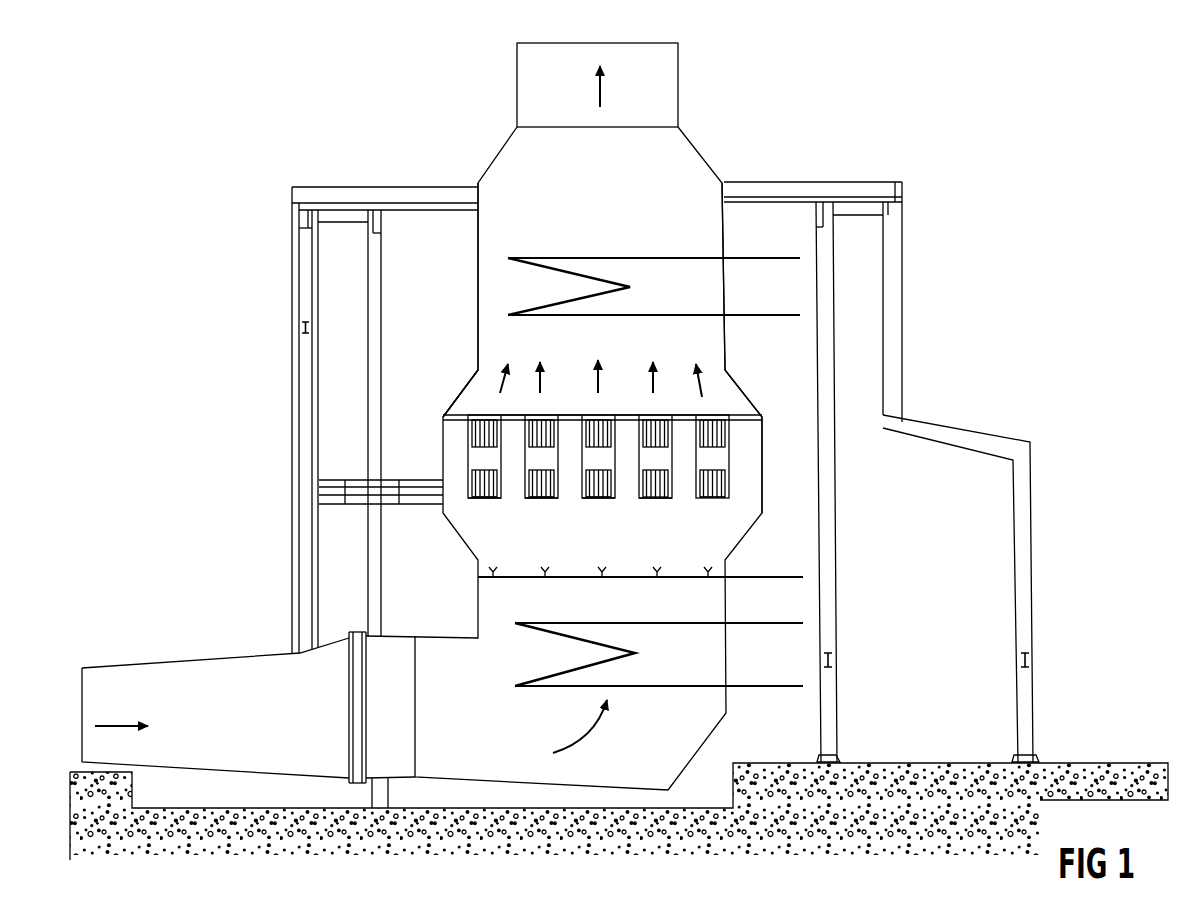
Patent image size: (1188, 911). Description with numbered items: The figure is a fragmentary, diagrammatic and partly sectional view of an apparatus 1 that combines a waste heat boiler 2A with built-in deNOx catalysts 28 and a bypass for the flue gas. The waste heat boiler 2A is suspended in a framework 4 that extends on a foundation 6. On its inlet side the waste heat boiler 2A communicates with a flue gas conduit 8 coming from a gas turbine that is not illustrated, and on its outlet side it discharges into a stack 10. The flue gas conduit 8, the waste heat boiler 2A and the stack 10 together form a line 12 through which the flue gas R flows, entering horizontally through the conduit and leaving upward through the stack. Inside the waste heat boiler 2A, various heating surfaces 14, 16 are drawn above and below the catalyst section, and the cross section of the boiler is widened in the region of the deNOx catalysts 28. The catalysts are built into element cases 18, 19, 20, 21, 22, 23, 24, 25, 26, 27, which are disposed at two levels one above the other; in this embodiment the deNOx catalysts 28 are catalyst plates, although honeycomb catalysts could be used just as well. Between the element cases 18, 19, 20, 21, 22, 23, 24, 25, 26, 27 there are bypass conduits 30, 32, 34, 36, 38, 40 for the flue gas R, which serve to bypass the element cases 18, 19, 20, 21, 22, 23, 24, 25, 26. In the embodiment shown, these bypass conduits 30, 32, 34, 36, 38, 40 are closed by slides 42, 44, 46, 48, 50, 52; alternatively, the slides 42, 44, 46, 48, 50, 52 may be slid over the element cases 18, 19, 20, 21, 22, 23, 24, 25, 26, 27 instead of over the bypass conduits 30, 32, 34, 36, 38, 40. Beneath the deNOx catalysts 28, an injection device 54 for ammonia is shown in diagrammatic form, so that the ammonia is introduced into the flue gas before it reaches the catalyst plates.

The apparatus 1 is at (829, 147).
The waste heat boiler 2A is at (710, 187).
The framework 4 is at (380, 327).
The foundation 6 is at (100, 820).
The flue gas conduit 8 is at (167, 677).
The stack 10 is at (663, 80).
The line 12 is at (680, 108).
The heating surface 14 is at (643, 623).
The heating surface 16 is at (613, 258).
The element case 18 is at (467, 435).
The element case 19 is at (490, 497).
The element case 20 is at (525, 432).
The element case 21 is at (547, 497).
The element case 22 is at (578, 428).
The element case 23 is at (605, 497).
The element case 24 is at (640, 428).
The element case 25 is at (650, 497).
The element case 26 is at (722, 430).
The element case 27 is at (713, 497).
The deNOx catalyst 28 is at (480, 497).
The bypass conduit 30 is at (457, 460).
The bypass conduit 32 is at (512, 477).
The bypass conduit 34 is at (570, 477).
The bypass conduit 36 is at (625, 477).
The bypass conduit 38 is at (682, 477).
The bypass conduit 40 is at (753, 492).
The slide 42 is at (455, 405).
The slide 44 is at (497, 413).
The slide 46 is at (580, 428).
The slide 48 is at (640, 428).
The slide 50 is at (695, 400).
The slide 52 is at (747, 410).
The injection device 54 is at (758, 577).